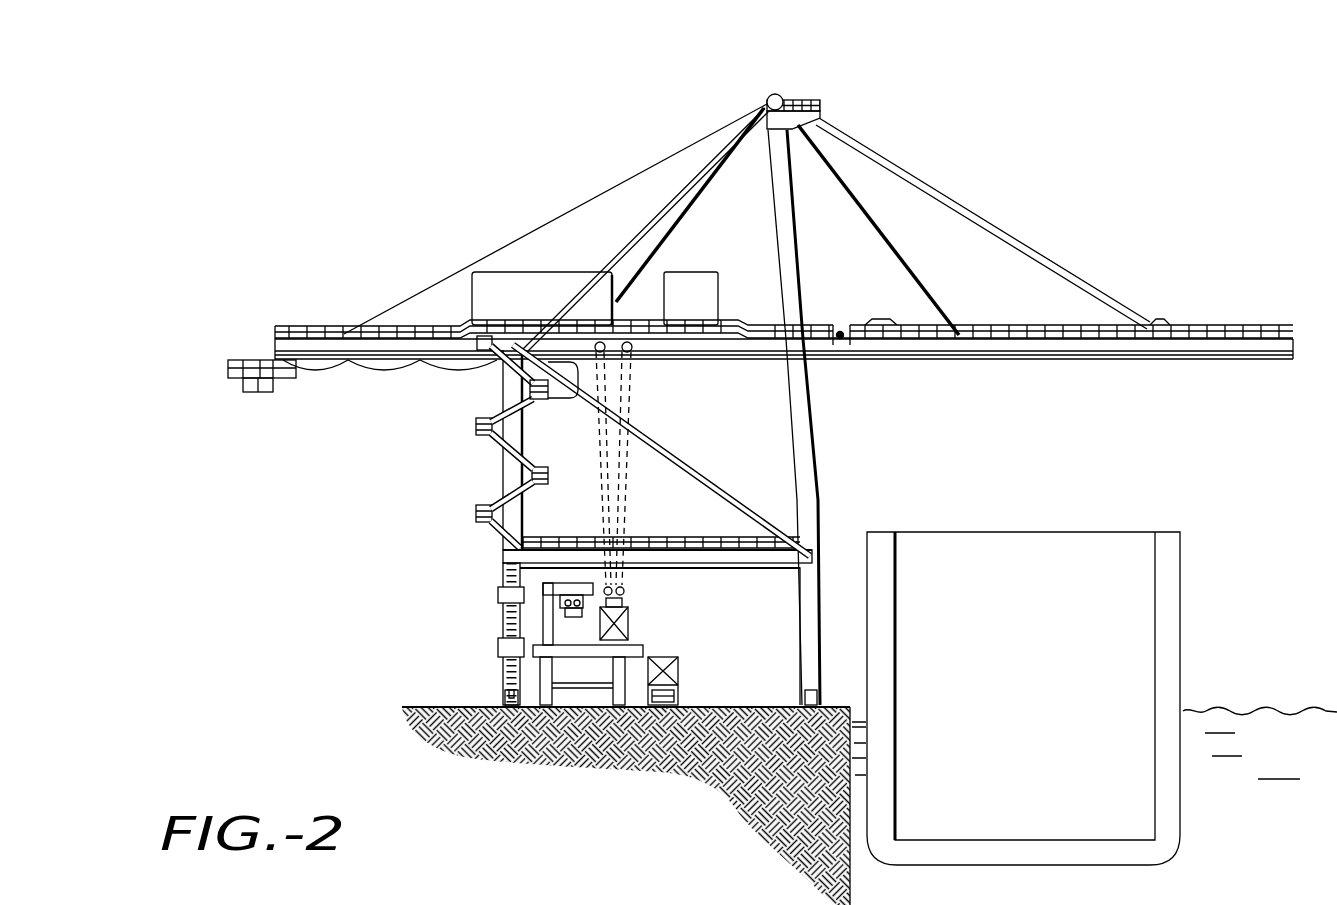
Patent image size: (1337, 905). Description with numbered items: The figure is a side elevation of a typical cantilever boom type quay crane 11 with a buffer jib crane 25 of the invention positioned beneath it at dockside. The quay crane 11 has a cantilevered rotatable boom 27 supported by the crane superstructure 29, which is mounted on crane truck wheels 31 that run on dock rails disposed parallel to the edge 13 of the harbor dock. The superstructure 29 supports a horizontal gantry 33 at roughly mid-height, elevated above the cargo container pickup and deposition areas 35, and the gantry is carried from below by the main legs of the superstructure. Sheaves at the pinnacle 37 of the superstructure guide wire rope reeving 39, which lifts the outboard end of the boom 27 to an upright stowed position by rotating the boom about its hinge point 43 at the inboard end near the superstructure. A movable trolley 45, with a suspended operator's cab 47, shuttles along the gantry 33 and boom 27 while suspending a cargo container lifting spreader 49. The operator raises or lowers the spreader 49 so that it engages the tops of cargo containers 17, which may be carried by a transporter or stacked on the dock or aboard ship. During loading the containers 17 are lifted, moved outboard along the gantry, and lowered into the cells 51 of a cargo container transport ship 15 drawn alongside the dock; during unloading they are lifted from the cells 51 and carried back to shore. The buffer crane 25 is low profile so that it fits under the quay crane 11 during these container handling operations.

The quay crane 11 is at (956, 145).
The edge of the harbor dock 13 is at (850, 812).
The ship 15 is at (1172, 597).
The cargo containers 17 is at (660, 660).
The buffer crane 25 is at (570, 646).
The cantilevered rotatable boom 27 is at (1183, 347).
The crane superstructure 29 is at (812, 446).
The crane truck wheels 31 is at (506, 692).
The horizontal gantry 33 is at (762, 346).
The cargo container pickup and deposition areas 35 is at (760, 646).
The pinnacle of the superstructure 37 is at (798, 118).
The wire rope reeving 39 is at (993, 221).
The hinge point 43 is at (841, 333).
The movable trolley 45 is at (630, 355).
The operator's cab 47 is at (543, 400).
The cargo container lifting spreader 49 is at (560, 603).
The cells 51 is at (1042, 646).